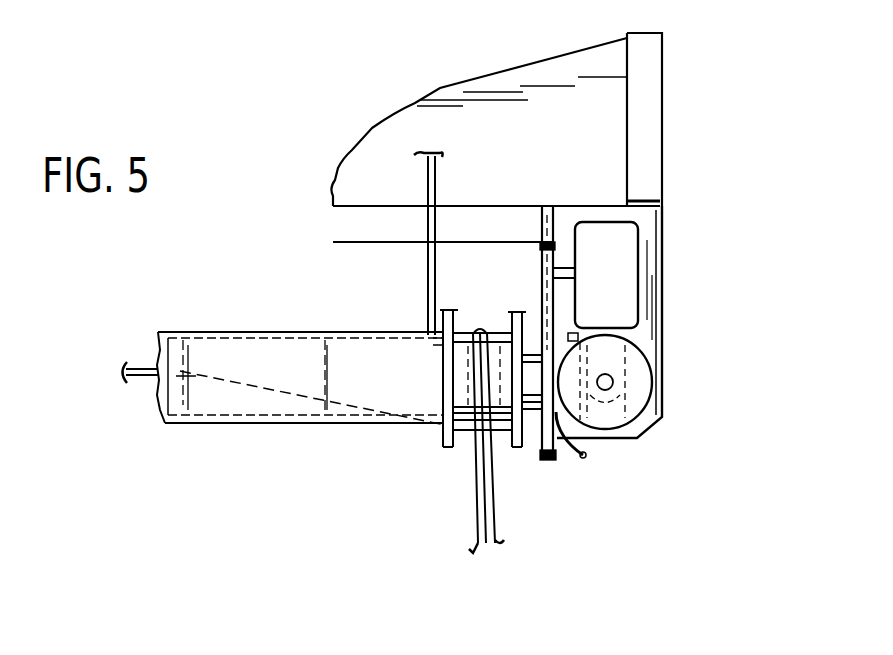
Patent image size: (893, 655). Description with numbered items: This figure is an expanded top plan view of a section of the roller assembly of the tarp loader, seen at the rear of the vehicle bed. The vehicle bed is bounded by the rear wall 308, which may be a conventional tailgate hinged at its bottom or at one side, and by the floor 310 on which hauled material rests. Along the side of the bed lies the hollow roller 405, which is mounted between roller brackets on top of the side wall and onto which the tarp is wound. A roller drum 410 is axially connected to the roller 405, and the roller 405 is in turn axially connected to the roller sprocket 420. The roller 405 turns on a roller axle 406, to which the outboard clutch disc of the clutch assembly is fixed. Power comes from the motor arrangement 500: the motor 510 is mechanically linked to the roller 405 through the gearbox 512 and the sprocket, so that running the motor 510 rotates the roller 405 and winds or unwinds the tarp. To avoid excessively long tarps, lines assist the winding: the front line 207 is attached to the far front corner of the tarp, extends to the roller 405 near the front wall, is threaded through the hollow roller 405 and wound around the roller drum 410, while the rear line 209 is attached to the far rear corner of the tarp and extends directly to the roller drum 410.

The front line 207 is at (141, 365).
The rear line 209 is at (427, 275).
The rear wall 308 is at (663, 117).
The floor 310 is at (549, 76).
The roller 405 is at (205, 427).
The roller axle 406 is at (523, 413).
The roller drum 410 is at (468, 447).
The roller sprocket 420 is at (557, 458).
The motor arrangement 500 is at (650, 433).
The motor 510 is at (655, 372).
The gearbox 512 is at (640, 262).